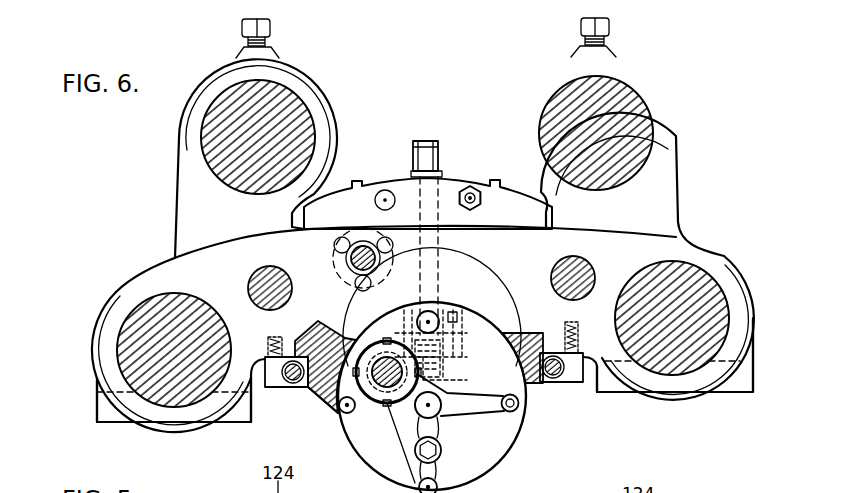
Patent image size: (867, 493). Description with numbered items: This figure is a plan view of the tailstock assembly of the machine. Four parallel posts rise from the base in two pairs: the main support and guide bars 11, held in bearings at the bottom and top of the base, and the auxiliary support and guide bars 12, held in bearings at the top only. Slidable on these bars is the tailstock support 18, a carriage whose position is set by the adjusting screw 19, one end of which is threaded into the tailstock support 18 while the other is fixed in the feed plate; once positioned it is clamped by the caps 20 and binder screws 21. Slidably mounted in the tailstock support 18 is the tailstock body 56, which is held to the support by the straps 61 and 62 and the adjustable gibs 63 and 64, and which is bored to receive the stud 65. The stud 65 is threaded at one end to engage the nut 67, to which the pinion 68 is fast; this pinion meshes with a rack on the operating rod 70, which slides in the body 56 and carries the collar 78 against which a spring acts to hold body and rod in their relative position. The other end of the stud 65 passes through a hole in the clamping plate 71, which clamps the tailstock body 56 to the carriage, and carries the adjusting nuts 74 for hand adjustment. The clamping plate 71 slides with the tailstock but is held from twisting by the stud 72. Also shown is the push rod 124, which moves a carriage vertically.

The main support and guide bars 11 is at (184, 296).
The auxiliary support and guide bars 12 is at (217, 175).
The tailstock support 18 is at (182, 265).
The adjusting screw 19 is at (362, 246).
The caps 20 is at (97, 415).
The binder screws 21 is at (268, 31).
The tailstock body 56 is at (522, 378).
The strap 61 is at (573, 383).
The strap 62 is at (267, 388).
The adjustable gib 63 is at (554, 383).
The adjustable gib 64 is at (303, 389).
The stud 65 is at (439, 263).
The nut 67 is at (472, 333).
The pinion 68 is at (461, 374).
The operating rod 70 is at (380, 388).
The clamping plate 71 is at (428, 203).
The stud 72 is at (462, 200).
The adjusting nuts 74 is at (412, 166).
The collar 78 is at (377, 345).
The push rod 124 is at (275, 280).